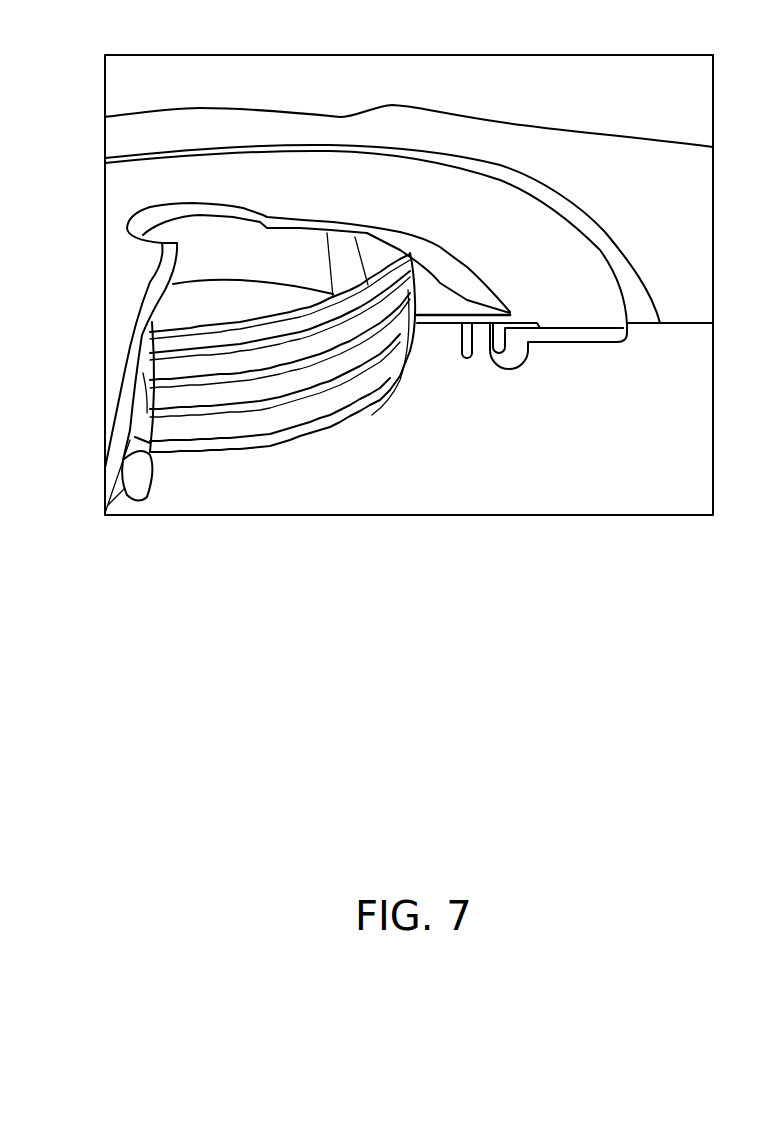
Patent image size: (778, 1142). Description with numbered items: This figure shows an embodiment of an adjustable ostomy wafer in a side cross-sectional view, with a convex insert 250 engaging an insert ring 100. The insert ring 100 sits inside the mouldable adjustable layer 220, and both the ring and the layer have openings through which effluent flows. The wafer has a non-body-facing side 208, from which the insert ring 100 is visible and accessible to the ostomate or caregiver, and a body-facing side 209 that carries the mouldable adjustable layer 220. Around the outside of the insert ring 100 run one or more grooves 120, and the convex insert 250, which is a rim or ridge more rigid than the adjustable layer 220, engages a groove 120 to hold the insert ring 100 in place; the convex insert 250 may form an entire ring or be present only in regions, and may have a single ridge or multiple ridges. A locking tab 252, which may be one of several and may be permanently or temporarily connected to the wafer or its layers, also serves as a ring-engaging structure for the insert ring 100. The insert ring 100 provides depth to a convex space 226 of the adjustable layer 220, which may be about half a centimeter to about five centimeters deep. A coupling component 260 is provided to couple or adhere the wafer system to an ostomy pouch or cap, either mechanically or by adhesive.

The insert ring 100 is at (233, 356).
The groove 120 is at (343, 380).
The non-body-facing side 208 is at (409, 325).
The body-facing side 209 is at (409, 265).
The mouldable adjustable layer 220 is at (382, 235).
The convex space 226 is at (172, 378).
The convex insert 250 is at (456, 273).
The locking tab 252 is at (437, 325).
The coupling component 260 is at (558, 373).